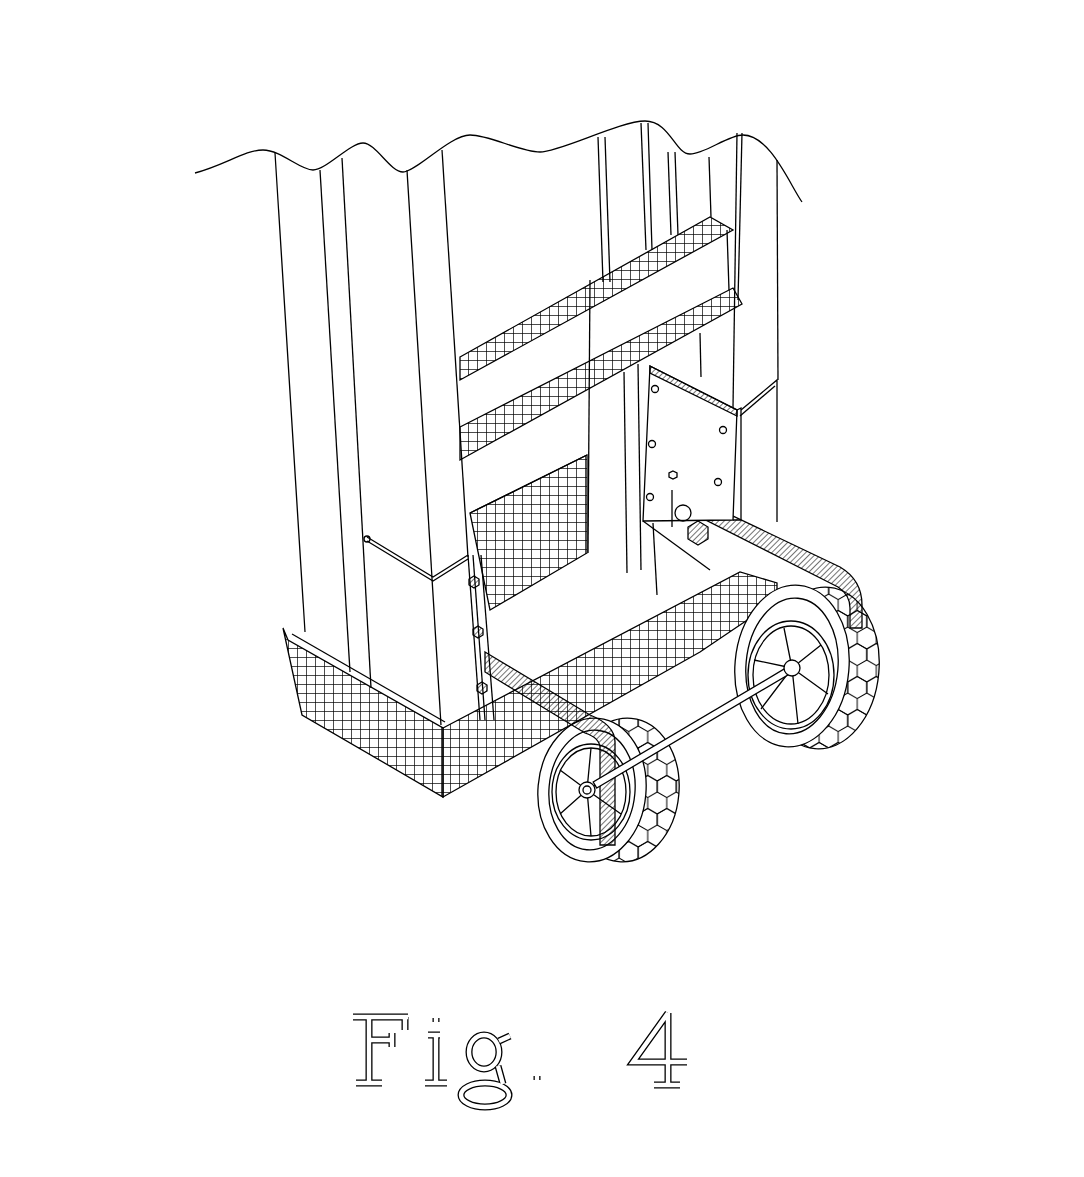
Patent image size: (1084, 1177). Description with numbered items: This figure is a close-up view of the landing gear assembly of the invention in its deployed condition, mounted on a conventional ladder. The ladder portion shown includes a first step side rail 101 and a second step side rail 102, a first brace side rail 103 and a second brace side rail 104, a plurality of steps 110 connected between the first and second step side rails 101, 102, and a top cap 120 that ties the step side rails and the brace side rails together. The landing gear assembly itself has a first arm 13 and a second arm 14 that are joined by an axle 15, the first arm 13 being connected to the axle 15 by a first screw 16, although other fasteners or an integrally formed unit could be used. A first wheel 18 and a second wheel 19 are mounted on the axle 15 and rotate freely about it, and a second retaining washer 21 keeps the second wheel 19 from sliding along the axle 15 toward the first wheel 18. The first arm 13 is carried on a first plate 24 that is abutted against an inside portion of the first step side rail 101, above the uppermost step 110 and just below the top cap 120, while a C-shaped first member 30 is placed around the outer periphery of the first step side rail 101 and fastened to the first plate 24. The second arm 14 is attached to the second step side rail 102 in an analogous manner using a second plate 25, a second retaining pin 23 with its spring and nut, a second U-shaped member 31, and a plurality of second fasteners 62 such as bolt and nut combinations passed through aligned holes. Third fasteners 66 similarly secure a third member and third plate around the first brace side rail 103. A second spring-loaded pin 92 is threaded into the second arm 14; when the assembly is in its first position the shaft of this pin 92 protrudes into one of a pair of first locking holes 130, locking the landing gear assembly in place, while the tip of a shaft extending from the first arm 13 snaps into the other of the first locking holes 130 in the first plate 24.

The first arm 13 is at (567, 730).
The second arm 14 is at (775, 545).
The axle 15 is at (726, 710).
The first screw 16 is at (560, 745).
The first wheel 18 is at (683, 797).
The second wheel 19 is at (873, 643).
The second retaining washer 21 is at (790, 735).
The second retaining pin 23 is at (735, 493).
The first plate 24 is at (478, 692).
The second plate 25 is at (740, 410).
The first member 30 is at (385, 647).
The second U-shaped member 31 is at (757, 422).
The second fasteners 62 is at (710, 405).
The third fasteners 66 is at (477, 632).
The second spring-loaded pin 92 is at (738, 523).
The first step side rail 101 is at (385, 323).
The second step side rail 102 is at (720, 202).
The first brace side rail 103 is at (303, 223).
The second brace side rail 104 is at (623, 148).
The steps 110 is at (688, 283).
The top cap 120 is at (301, 665).
The first locking holes 130 is at (673, 471).